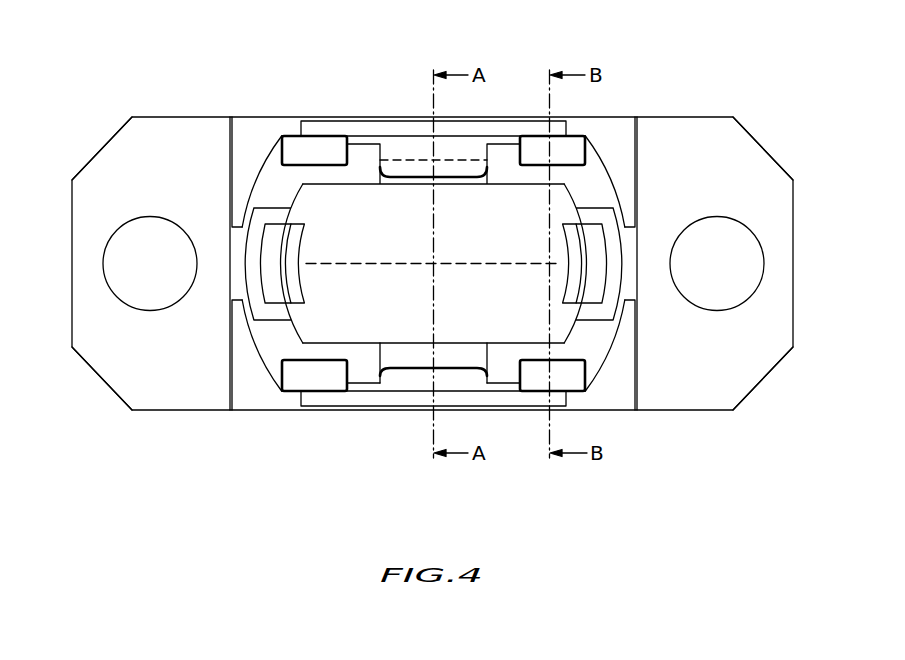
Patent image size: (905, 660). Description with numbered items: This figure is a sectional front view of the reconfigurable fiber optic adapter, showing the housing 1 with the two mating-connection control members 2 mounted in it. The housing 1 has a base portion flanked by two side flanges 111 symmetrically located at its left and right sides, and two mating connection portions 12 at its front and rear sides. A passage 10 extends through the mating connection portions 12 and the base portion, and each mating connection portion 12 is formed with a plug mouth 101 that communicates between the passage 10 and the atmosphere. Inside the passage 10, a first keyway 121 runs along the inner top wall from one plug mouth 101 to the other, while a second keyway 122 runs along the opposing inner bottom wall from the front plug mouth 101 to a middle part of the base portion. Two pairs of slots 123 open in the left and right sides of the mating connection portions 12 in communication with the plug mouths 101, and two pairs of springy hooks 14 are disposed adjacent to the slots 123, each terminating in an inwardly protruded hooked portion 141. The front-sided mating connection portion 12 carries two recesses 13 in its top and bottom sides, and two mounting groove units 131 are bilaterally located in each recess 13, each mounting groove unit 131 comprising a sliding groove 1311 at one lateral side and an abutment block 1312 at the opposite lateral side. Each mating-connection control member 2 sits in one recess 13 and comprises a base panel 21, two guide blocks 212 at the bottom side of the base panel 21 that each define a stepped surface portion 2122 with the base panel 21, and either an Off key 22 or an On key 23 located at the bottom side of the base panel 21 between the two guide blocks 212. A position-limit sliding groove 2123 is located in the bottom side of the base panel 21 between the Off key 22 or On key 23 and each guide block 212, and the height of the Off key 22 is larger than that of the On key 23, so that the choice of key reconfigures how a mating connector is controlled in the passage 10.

The housing 1 is at (212, 104).
The mating-connection control member 2 is at (366, 64).
The passage 10 is at (321, 203).
The mating connection portion 12 is at (261, 124).
The recess 13 is at (300, 414).
The springy hook 14 is at (272, 242).
The base panel 21 is at (365, 128).
The Off key 22 is at (406, 153).
The On key 23 is at (408, 375).
The plug mouth 101 is at (268, 343).
The side flange 111 is at (113, 162).
The first keyway 121 is at (462, 158).
The second keyway 122 is at (483, 353).
The slot 123 is at (270, 316).
The mounting groove unit 131 is at (560, 356).
The hooked portion 141 is at (286, 262).
The guide block 212 is at (288, 378).
The sliding groove 1311 is at (587, 373).
The abutment block 1312 is at (510, 375).
The stepped surface portion 2122 is at (325, 378).
The position-limit sliding groove 2123 is at (363, 380).